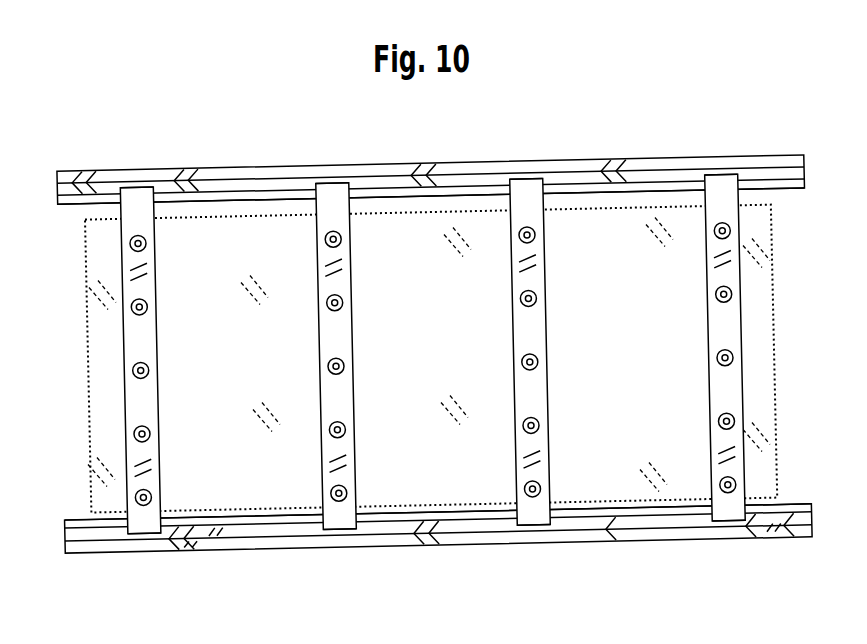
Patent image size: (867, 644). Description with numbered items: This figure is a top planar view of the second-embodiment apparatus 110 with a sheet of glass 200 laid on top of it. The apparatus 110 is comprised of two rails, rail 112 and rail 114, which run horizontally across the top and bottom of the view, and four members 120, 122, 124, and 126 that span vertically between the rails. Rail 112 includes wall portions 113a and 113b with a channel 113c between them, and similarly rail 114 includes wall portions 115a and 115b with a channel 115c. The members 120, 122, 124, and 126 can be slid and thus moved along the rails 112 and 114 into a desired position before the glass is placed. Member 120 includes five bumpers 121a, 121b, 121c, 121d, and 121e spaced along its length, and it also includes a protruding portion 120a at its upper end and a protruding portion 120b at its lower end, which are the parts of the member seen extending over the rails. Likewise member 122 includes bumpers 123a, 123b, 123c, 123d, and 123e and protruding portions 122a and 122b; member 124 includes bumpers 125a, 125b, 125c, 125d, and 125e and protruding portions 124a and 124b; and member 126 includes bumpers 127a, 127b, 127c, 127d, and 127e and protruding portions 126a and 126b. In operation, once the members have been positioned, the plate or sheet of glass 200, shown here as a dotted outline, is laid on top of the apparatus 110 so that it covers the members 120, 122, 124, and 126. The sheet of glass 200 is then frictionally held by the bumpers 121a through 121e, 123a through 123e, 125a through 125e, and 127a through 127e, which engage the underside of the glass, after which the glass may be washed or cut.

The apparatus 110 is at (651, 101).
The rail 112 is at (468, 162).
The wall portion 113a is at (285, 172).
The wall portion 113b is at (267, 198).
The channel 113c is at (223, 185).
The rail 114 is at (472, 538).
The wall portion 115a is at (295, 547).
The wall portion 115b is at (237, 515).
The channel 115c is at (248, 532).
The member 120 is at (133, 410).
The protruding portion 120a is at (143, 185).
The protruding portion 120b is at (140, 538).
The bumper 121a is at (147, 241).
The bumper 121b is at (148, 304).
The bumper 121c is at (149, 368).
The bumper 121d is at (150, 431).
The bumper 121e is at (151, 494).
The member 122 is at (323, 390).
The protruding portion 122a is at (345, 180).
The protruding portion 122b is at (343, 535).
The bumper 123a is at (342, 239).
The bumper 123b is at (343, 301).
The bumper 123c is at (344, 364).
The bumper 123d is at (345, 428).
The bumper 123e is at (346, 491).
The member 124 is at (518, 392).
The protruding portion 124a is at (533, 178).
The protruding portion 124b is at (537, 532).
The bumper 125a is at (536, 233).
The bumper 125b is at (537, 296).
The bumper 125c is at (538, 359).
The bumper 125d is at (540, 422).
The bumper 125e is at (541, 485).
The member 126 is at (713, 390).
The protruding portion 126a is at (735, 173).
The protruding portion 126b is at (733, 523).
The bumper 127a is at (731, 229).
The bumper 127b is at (732, 292).
The bumper 127c is at (733, 355).
The bumper 127d is at (735, 419).
The bumper 127e is at (736, 482).
The sheet of glass 200 is at (88, 293).